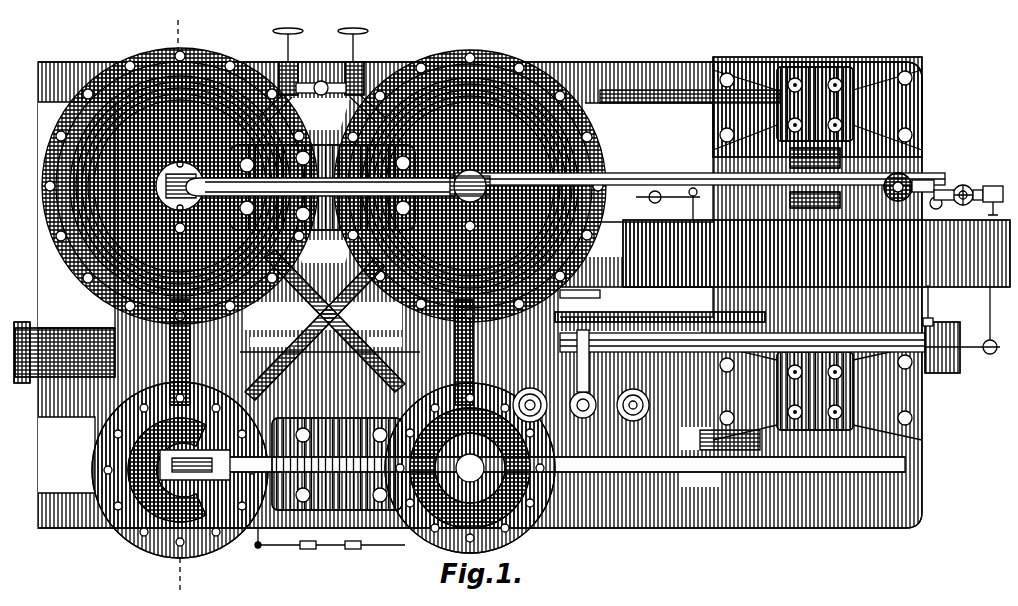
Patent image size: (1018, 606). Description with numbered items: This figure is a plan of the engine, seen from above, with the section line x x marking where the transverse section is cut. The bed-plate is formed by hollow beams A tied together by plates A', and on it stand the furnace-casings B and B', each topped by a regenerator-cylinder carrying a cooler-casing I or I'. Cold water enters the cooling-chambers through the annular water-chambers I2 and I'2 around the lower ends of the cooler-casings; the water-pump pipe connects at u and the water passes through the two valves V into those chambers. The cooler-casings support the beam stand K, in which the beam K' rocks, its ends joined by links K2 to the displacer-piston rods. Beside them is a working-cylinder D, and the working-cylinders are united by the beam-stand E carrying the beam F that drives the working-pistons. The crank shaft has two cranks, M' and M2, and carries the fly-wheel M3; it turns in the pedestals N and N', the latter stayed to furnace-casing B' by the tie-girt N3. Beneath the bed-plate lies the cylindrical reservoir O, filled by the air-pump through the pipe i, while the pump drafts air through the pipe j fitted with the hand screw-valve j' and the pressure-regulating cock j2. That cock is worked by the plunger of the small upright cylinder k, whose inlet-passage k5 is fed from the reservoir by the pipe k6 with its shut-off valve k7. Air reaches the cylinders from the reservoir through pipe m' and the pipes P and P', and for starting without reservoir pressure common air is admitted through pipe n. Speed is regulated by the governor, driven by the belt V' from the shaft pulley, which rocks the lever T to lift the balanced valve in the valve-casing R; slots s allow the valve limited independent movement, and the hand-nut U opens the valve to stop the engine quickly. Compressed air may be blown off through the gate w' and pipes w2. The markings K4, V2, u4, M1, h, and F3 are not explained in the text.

The hollow beams A is at (471, 291).
The plates A' is at (404, 395).
The furnace-casing B is at (170, 186).
The furnace-casing B' is at (476, 186).
The cooler-casing I is at (180, 186).
The annular water-chamber I2 is at (110, 104).
The cooler-casing I' is at (470, 186).
The annular water-chamber I'2 is at (433, 106).
The beam stand K is at (322, 187).
The beam K' is at (320, 187).
The link or connecting-rod K2 is at (164, 188).
The extension rod K4 is at (632, 174).
The valves V is at (322, 75).
The belt V' is at (660, 306).
The vent V2 is at (172, 229).
The threaded nut U is at (461, 228).
The water-pipe connection u is at (312, 116).
The pipe connection u4 is at (410, 113).
The pedestal N is at (817, 392).
The pedestal N' is at (817, 107).
The tie-girt N3 is at (670, 103).
The bearing block M1 is at (815, 158).
The crank M2 is at (815, 200).
The fly-wheel M3 is at (816, 253).
The crank M' is at (731, 439).
The posts h is at (321, 352).
The pipe P is at (335, 321).
The pipe P' is at (315, 329).
The pipe m' is at (330, 344).
The reservoir O is at (492, 352).
The working-cylinder D is at (180, 470).
The beam F is at (532, 465).
The rod extension F3 is at (673, 477).
The beam-stand E is at (337, 464).
The lever T is at (470, 468).
The slots s is at (581, 385).
The valve-casing R is at (337, 428).
The upright cylinder k is at (912, 178).
The inlet-passage k5 is at (920, 184).
The pipe k6 is at (936, 305).
The shut-off valve k7 is at (943, 206).
The pipe j is at (993, 192).
The screw-valve j' is at (974, 184).
The pressure-regulating cock j2 is at (953, 186).
The pipe n is at (795, 321).
The pipe i is at (668, 260).
The pipes w2 is at (330, 543).
The valve or gate w' is at (425, 542).
The section line x is at (177, 302).